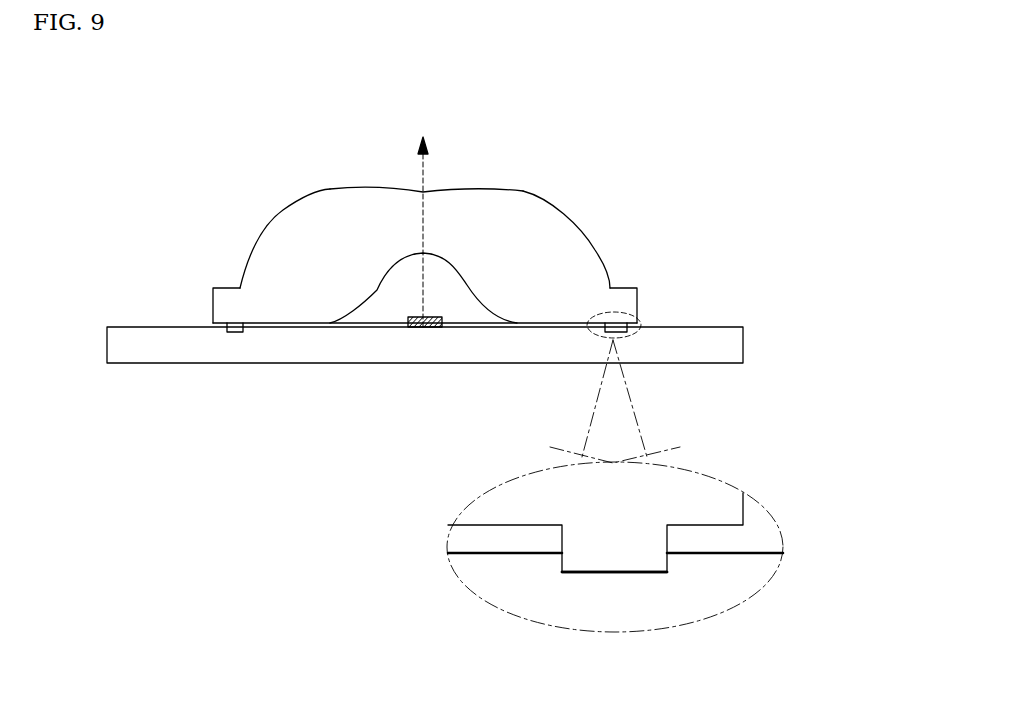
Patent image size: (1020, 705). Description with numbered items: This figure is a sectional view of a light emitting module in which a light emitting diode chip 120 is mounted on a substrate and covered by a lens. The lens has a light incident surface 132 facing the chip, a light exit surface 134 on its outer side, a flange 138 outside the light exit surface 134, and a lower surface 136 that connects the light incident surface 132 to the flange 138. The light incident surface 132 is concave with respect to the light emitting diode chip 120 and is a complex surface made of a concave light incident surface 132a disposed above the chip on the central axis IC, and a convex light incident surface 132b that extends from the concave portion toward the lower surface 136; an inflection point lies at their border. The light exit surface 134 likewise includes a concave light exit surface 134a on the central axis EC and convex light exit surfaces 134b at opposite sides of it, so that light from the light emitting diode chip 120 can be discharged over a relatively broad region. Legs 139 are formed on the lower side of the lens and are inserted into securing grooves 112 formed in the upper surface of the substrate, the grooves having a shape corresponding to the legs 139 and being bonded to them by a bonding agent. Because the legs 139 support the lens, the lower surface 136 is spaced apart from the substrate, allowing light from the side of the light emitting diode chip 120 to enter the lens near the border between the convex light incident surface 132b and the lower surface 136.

The securing groove 112 is at (657, 573).
The light emitting diode chip 120 is at (413, 328).
The light incident surface 132 is at (207, 172).
The concave light incident surface 132a is at (393, 260).
The convex light incident surface 132b is at (352, 313).
The light exit surface 134 is at (590, 110).
The concave light exit surface 134a is at (458, 188).
The convex light exit surface 134b is at (325, 188).
The lower surface 136 is at (215, 323).
The flange 138 is at (622, 297).
The leg 139 is at (619, 324).